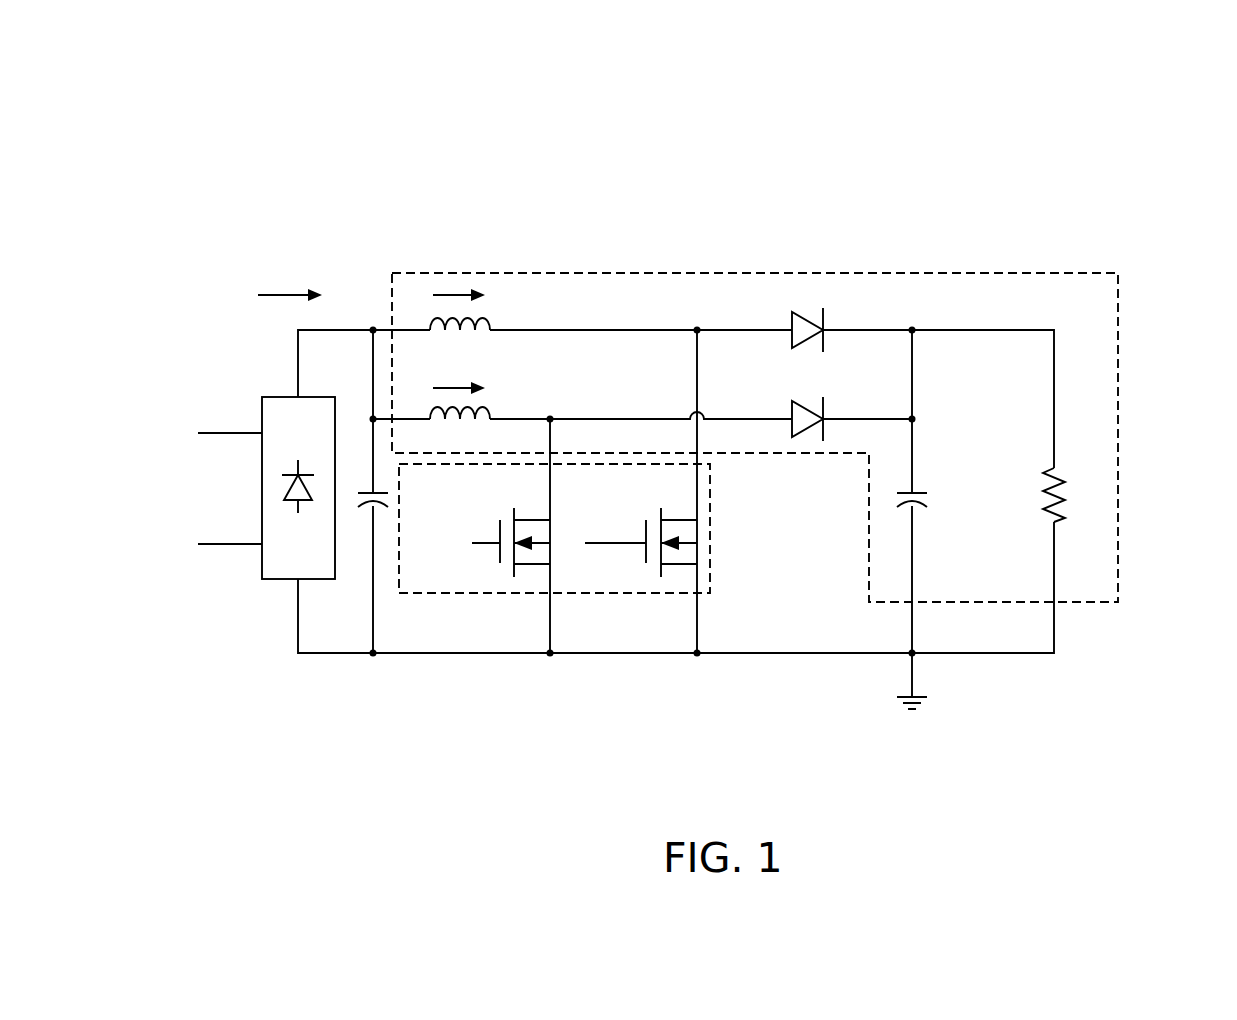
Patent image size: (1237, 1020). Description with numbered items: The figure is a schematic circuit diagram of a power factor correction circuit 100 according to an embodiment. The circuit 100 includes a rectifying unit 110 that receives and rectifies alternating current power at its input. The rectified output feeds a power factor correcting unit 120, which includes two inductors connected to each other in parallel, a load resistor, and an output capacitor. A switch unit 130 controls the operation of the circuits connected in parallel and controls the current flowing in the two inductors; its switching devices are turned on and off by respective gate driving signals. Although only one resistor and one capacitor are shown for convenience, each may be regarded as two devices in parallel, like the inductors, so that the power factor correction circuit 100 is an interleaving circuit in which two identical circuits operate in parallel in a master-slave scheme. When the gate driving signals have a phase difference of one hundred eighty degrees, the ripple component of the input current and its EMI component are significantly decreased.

The power factor correction circuit 100 is at (1090, 237).
The rectifying unit 110 is at (262, 579).
The power factor correcting unit 120 is at (1100, 602).
The switch unit 130 is at (642, 593).